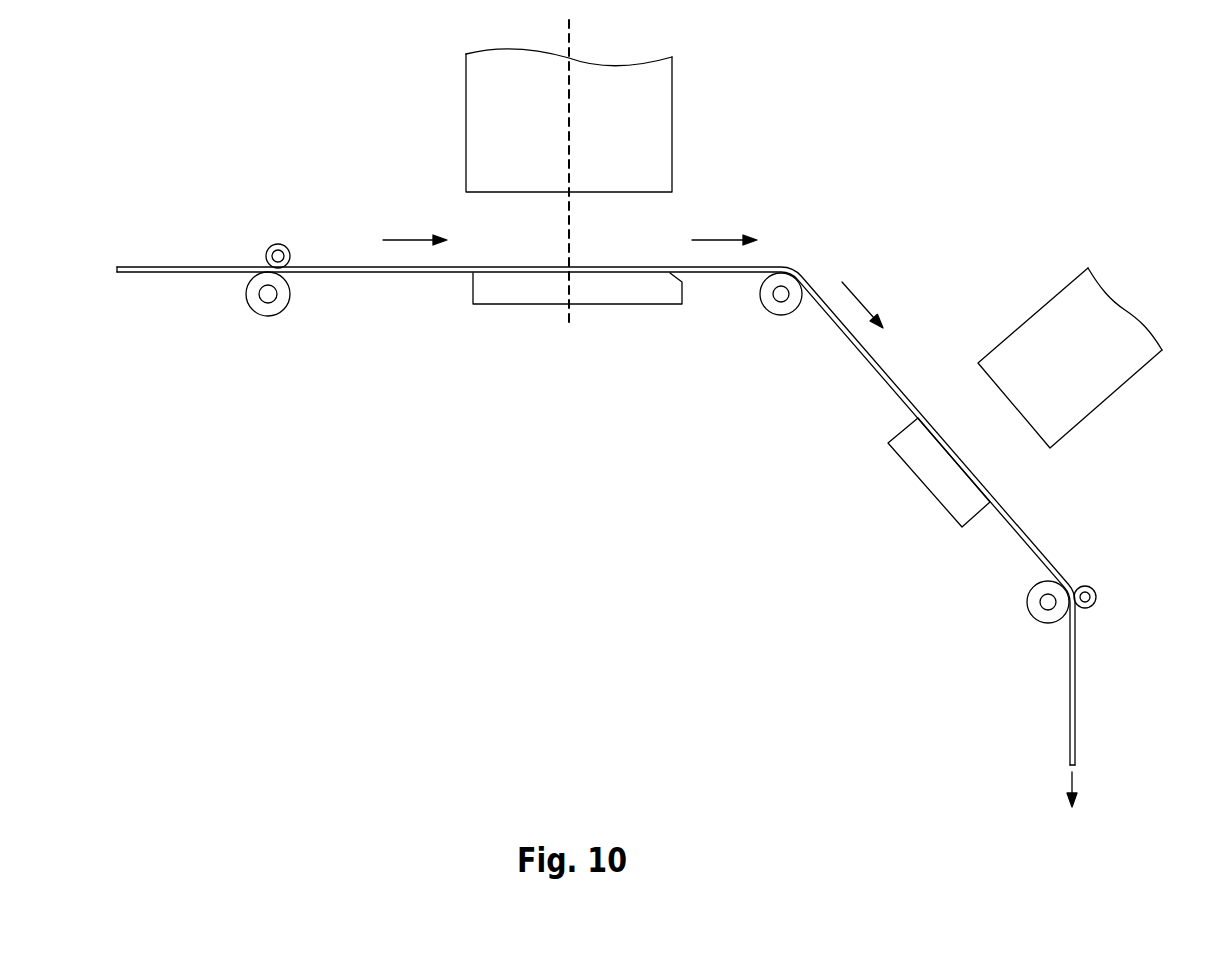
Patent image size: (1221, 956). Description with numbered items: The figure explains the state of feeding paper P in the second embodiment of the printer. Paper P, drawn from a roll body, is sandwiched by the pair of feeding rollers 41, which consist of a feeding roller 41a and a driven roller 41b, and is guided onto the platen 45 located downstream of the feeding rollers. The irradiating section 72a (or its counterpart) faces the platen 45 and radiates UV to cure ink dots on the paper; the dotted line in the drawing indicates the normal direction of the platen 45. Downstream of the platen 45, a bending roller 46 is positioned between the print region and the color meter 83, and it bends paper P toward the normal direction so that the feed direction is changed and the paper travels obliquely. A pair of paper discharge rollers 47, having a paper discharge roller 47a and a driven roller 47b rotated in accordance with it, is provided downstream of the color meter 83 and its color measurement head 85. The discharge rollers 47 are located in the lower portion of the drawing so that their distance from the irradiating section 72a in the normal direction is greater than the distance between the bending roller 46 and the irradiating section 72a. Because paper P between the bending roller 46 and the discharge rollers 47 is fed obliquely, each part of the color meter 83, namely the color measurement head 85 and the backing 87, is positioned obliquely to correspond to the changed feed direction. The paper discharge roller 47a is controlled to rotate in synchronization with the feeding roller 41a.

The paper P is at (348, 267).
The pair of feeding rollers 41 is at (272, 279).
The feeding roller 41a is at (267, 316).
The driven roller 41b is at (283, 247).
The platen 45 is at (595, 307).
The bending roller 46 is at (780, 317).
The pair of paper discharge rollers 47 is at (1064, 642).
The paper discharge roller 47a is at (1028, 602).
The driven roller 47b is at (1097, 600).
The irradiating section 72a is at (672, 122).
The color meter 83 is at (1074, 318).
The color measurement head 85 is at (1107, 398).
The backing 87 is at (922, 487).